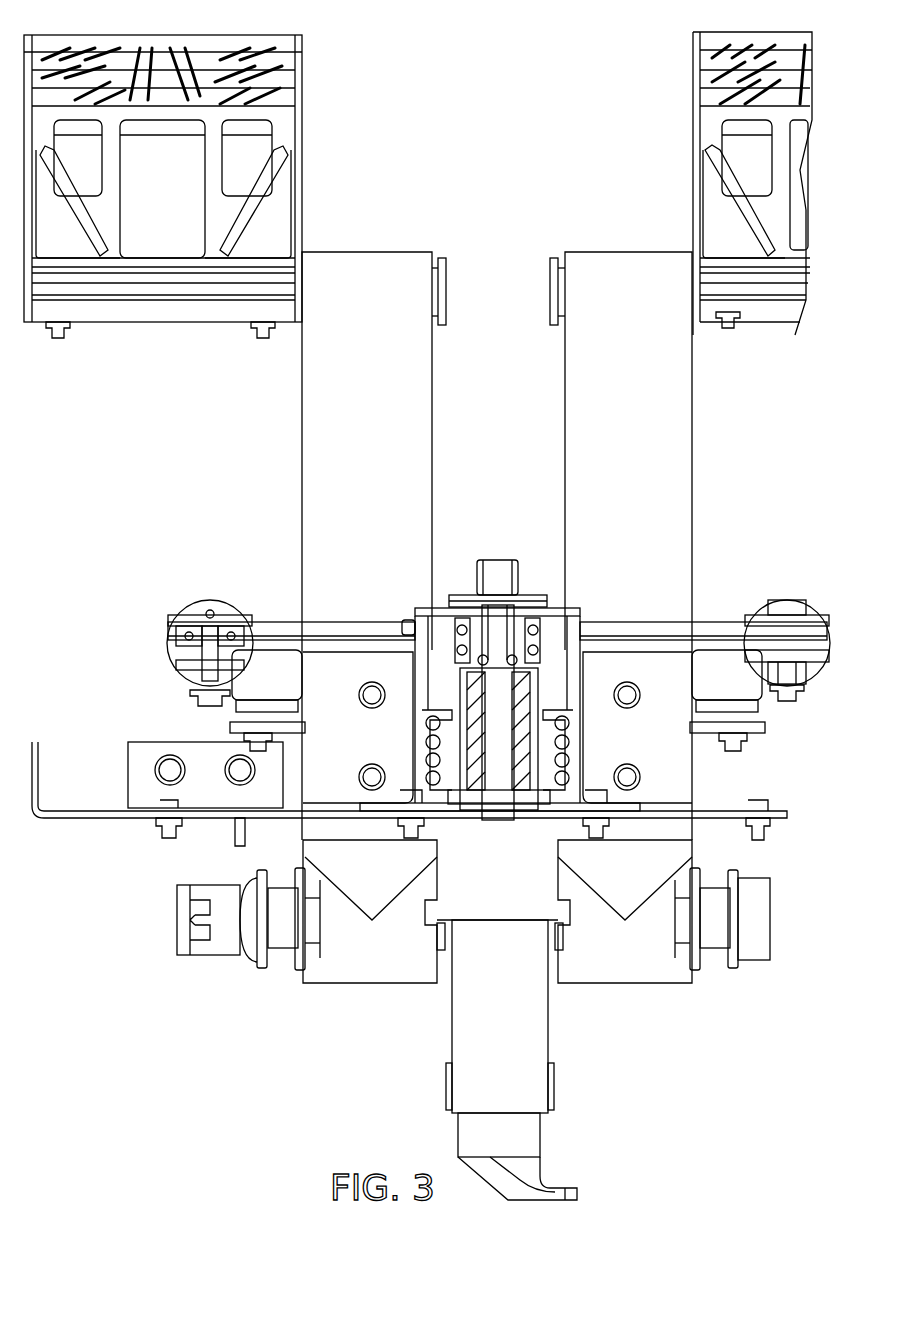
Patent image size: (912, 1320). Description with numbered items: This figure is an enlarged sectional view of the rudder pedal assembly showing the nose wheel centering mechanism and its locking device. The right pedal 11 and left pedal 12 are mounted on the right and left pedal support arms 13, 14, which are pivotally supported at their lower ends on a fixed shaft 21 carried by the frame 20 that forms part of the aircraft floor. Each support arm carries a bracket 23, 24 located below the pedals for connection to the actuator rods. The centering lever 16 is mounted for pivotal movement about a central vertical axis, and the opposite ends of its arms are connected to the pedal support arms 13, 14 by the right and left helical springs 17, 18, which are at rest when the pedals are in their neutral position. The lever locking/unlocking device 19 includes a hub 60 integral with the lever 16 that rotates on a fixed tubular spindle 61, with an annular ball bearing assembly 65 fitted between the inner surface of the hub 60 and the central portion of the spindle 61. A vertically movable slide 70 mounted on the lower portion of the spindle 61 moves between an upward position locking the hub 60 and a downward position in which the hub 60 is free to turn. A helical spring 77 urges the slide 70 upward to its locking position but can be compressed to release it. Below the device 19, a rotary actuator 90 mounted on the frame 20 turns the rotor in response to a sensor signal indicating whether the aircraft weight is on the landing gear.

The right pedal 11 is at (692, 173).
The left pedal 12 is at (172, 323).
The right pedal support arm 13 is at (680, 393).
The left pedal support arm 14 is at (318, 402).
The centering lever 16 is at (660, 622).
The right helical spring 17 is at (790, 603).
The left helical spring 18 is at (180, 612).
The lever locking/unlocking device 19 is at (413, 654).
The frame 20 is at (88, 808).
The fixed shaft 21 is at (770, 920).
The bracket 23 is at (692, 658).
The bracket 24 is at (300, 653).
The hub 60 is at (583, 690).
The fixed tubular spindle 61 is at (490, 560).
The annular ball bearing assembly 65 is at (558, 630).
The vertically movable slide 70 is at (428, 712).
The helical spring 77 is at (568, 765).
The rotary actuator 90 is at (507, 881).